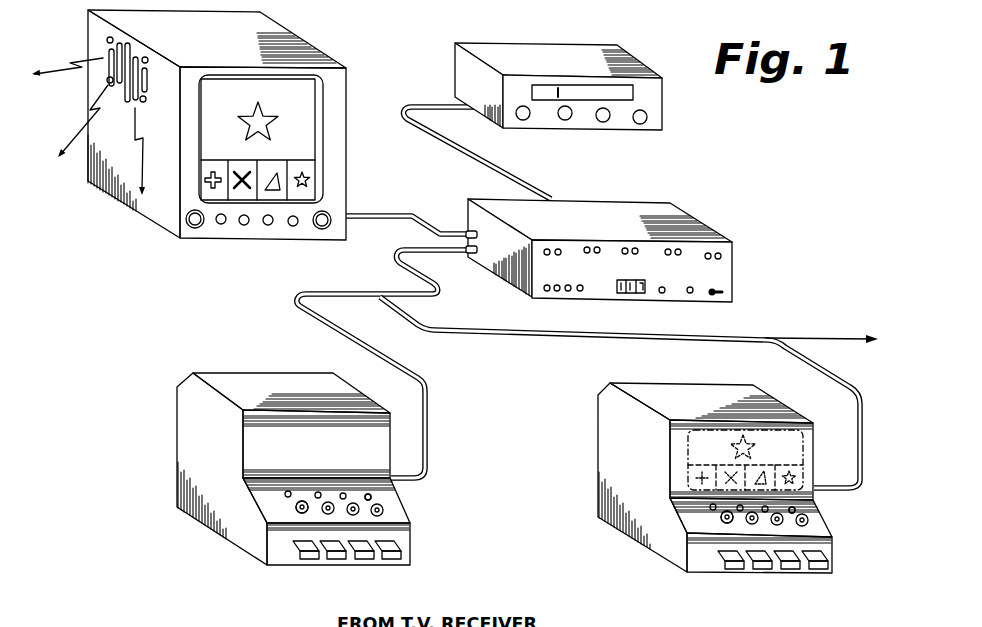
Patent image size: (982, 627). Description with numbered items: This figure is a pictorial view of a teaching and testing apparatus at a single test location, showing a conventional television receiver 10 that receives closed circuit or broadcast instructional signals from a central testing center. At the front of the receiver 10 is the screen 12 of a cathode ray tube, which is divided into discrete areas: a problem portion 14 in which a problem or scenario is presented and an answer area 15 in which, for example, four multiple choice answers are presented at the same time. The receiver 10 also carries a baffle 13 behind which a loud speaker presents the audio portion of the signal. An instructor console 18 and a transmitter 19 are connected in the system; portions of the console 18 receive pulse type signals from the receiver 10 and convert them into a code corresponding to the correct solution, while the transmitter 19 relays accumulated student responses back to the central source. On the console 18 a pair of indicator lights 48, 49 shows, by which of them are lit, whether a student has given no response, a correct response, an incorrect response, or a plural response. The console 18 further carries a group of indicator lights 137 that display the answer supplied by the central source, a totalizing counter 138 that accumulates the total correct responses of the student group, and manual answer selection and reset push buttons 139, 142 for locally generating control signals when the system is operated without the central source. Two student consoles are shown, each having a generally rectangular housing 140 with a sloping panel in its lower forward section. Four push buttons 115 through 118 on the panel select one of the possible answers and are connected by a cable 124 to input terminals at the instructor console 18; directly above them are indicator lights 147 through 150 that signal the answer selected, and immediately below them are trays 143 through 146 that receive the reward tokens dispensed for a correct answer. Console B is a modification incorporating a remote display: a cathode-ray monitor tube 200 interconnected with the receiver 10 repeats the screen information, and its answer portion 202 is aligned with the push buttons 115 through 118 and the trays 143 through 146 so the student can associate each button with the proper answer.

The television receiver 10 is at (318, 49).
The screen 12 is at (308, 115).
The baffle 13 is at (110, 52).
The problem portion 14 is at (223, 88).
The answer area 15 is at (213, 192).
The instructor console 18 is at (706, 233).
The transmitter 19 is at (662, 97).
The indicator light 48 is at (547, 248).
The indicator light 49 is at (561, 249).
The cable 124 is at (340, 290).
The indicator lights 137 is at (567, 292).
The totalizing counter 138 is at (629, 294).
The answer push button 139 is at (662, 294).
The reset push button 142 is at (691, 293).
The housing 140 is at (177, 411).
The indicator light 147 is at (286, 495).
The indicator light 150 is at (373, 495).
The push button 118 is at (385, 509).
The push button 115 is at (299, 512).
The tray 143 is at (300, 558).
The tray 146 is at (398, 558).
The monitor tube 200 is at (811, 427).
The answer portion 202 is at (799, 472).